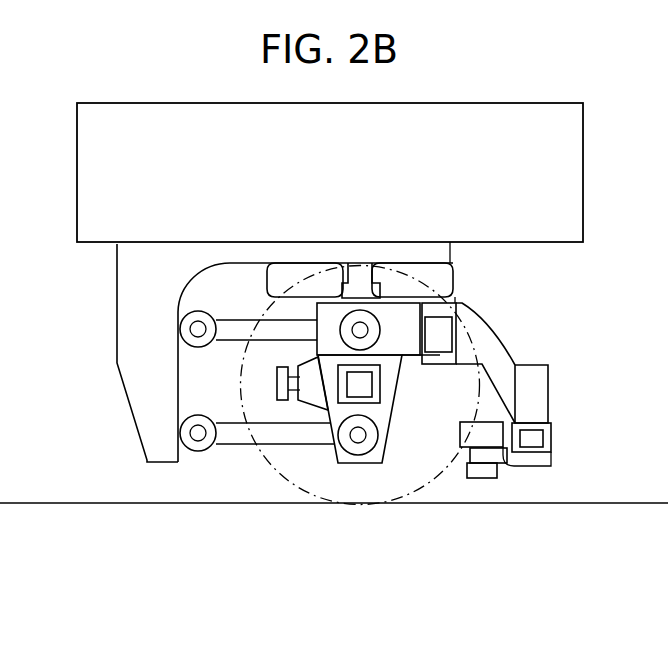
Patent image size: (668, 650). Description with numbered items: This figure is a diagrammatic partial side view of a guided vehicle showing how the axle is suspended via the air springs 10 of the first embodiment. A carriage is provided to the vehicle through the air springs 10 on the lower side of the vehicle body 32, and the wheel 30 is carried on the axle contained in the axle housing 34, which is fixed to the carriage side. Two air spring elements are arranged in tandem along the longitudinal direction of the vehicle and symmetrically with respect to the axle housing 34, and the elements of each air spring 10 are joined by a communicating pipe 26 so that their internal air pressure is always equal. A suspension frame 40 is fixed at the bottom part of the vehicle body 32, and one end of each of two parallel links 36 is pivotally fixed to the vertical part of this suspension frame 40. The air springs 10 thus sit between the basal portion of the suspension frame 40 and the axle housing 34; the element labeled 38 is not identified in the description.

The air spring 10 is at (285, 270).
The communicating pipe 26 is at (362, 270).
The wheel 30 is at (402, 473).
The vehicle body 32 is at (558, 143).
The axle housing 34 is at (378, 394).
The parallel links 36 is at (225, 342).
The motor unit 38 is at (495, 450).
The suspension frame 40 is at (136, 390).